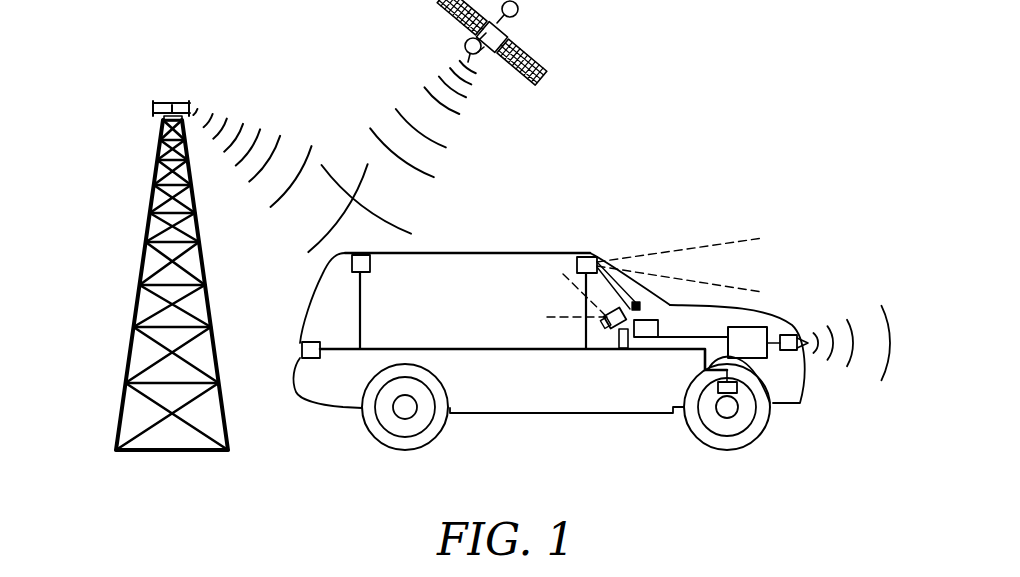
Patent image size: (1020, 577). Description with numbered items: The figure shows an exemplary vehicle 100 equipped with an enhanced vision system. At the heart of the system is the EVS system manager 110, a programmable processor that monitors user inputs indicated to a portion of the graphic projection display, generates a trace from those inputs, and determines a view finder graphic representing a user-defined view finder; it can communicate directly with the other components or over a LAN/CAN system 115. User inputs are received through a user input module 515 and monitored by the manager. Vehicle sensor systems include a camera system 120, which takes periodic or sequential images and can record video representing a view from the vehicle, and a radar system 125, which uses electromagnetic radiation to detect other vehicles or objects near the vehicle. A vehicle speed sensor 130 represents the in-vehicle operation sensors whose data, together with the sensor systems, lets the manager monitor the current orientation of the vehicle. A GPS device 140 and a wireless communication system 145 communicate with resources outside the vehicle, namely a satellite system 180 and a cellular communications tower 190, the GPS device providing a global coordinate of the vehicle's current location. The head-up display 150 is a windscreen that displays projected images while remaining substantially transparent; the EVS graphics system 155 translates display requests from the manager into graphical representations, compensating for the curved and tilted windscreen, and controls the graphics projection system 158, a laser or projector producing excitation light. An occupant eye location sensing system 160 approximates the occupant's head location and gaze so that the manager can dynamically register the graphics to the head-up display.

The vehicle 100 is at (515, 253).
The EVS system manager 110 is at (757, 353).
The LAN/CAN system 115 is at (392, 349).
The camera system 120 is at (592, 256).
The radar system 125 is at (803, 339).
The vehicle speed sensor 130 is at (735, 392).
The GPS device 140 is at (300, 352).
The wireless communication system 145 is at (352, 260).
The head-up display (HUD) 150 is at (655, 301).
The EVS graphics system 155 is at (645, 337).
The graphics projection system 158 is at (637, 306).
The occupant eye location sensing system 160 is at (614, 327).
The satellite system 180 is at (466, 45).
The cellular communications tower 190 is at (146, 245).
The user input module (UIM) 515 is at (626, 348).